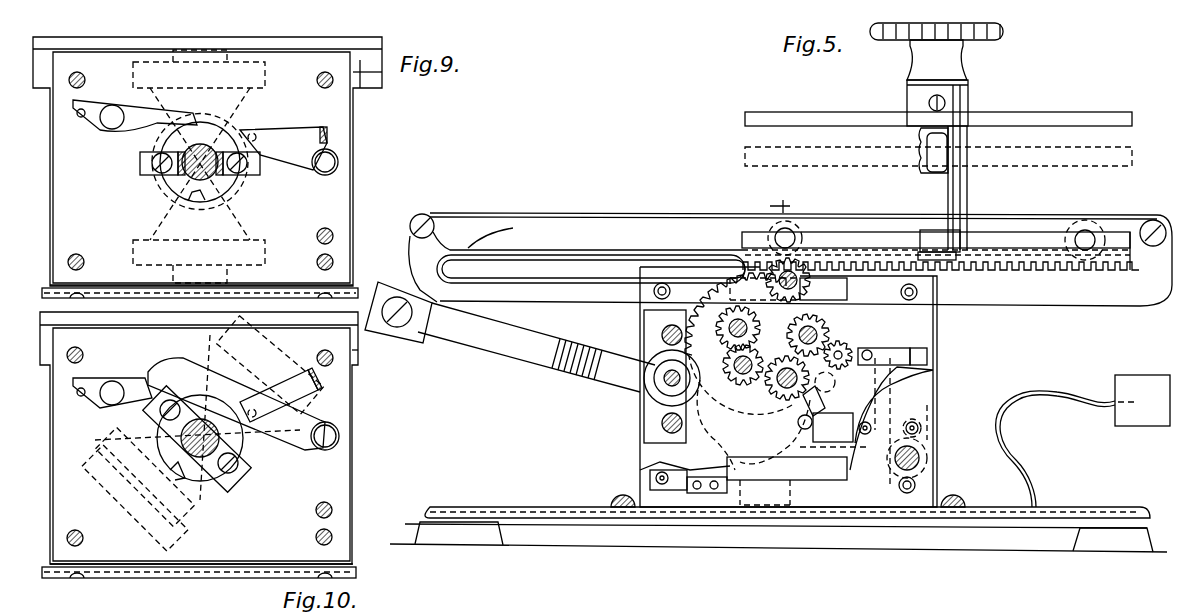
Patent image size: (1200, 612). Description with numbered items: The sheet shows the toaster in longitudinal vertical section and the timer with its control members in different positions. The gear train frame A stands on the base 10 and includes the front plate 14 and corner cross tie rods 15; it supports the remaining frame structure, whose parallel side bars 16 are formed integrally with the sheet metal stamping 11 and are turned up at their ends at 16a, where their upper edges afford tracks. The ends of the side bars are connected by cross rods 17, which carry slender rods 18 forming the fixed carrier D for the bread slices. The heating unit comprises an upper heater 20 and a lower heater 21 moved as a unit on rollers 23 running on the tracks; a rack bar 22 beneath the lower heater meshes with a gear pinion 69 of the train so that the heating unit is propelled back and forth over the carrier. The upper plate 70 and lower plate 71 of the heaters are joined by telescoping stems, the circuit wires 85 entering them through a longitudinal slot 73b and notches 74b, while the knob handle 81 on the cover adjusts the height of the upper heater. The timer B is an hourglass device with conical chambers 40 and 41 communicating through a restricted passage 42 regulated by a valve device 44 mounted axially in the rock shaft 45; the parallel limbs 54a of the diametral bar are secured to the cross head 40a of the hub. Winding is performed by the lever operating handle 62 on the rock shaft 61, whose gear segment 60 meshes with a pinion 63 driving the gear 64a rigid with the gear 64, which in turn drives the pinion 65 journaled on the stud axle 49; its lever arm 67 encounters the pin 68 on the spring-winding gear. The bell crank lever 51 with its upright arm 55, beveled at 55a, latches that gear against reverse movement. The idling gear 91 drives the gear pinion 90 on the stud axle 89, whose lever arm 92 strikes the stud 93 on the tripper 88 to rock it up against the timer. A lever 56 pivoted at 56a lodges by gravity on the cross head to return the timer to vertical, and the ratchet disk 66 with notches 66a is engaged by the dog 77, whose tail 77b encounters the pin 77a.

In FIG. 9, the base 10 is at (328, 290).
In FIG. 10, the base 10 is at (232, 564).
In FIG. 5, the base 10 is at (555, 520).
In FIG. 9, the sheet metal stamping 11 is at (62, 205).
In FIG. 10, the sheet metal stamping 11 is at (75, 438).
In FIG. 5, the sheet metal stamping 11 is at (640, 438).
In FIG. 9, the front plate 14 is at (330, 198).
In FIG. 10, the front plate 14 is at (322, 486).
In FIG. 5, the front plate 14 is at (888, 495).
In FIG. 9, the corner cross tie rods 15 is at (82, 76).
In FIG. 10, the corner cross tie rods 15 is at (80, 352).
In FIG. 5, the corner cross tie rods 15 is at (654, 292).
In FIG. 9, the side bars 16 is at (366, 80).
In FIG. 10, the side bars 16 is at (358, 362).
In FIG. 5, the side bars 16 is at (603, 276).
In FIG. 5, the turned-up ends of side bars 16a is at (506, 237).
In FIG. 5, the cross rods 17 is at (428, 214).
In FIG. 5, the slender rods 18 is at (612, 213).
In FIG. 5, the upper heater 20 is at (745, 120).
In FIG. 5, the lower heater 21 is at (1000, 230).
In FIG. 5, the rack bar 22 is at (1002, 272).
In FIG. 5, the rollers 23 is at (772, 228).
In FIG. 9, the conical chamber 40 is at (265, 70).
In FIG. 10, the conical chamber 40 is at (262, 408).
In FIG. 5, the conical chamber 40 is at (848, 292).
In FIG. 9, the cross head 40a is at (140, 160).
In FIG. 10, the cross head 40a is at (250, 472).
In FIG. 9, the conical chamber 41 is at (262, 255).
In FIG. 10, the conical chamber 41 is at (190, 540).
In FIG. 5, the conical chamber 41 is at (840, 480).
In FIG. 10, the restricted passage 42 is at (222, 436).
In FIG. 9, the valve device 44 is at (200, 162).
In FIG. 10, the valve device 44 is at (200, 457).
In FIG. 9, the rock shaft 45 is at (228, 176).
In FIG. 10, the rock shaft 45 is at (165, 435).
In FIG. 5, the stud axle 49 is at (775, 432).
In FIG. 5, the bell crank lever 51 is at (758, 473).
In FIG. 9, the parallel limbs 54a is at (145, 130).
In FIG. 10, the parallel limbs 54a is at (160, 412).
In FIG. 5, the upright arm 55 is at (925, 400).
In FIG. 5, the beveled end 55a is at (930, 372).
In FIG. 9, the lever 56 is at (297, 150).
In FIG. 10, the lever 56 is at (234, 388).
In FIG. 9, the pivot 56a is at (338, 158).
In FIG. 10, the pivot 56a is at (339, 432).
In FIG. 5, the gear segment 60 is at (716, 425).
In FIG. 5, the rock shaft 61 is at (668, 375).
In FIG. 5, the lever operating handle 62 is at (488, 335).
In FIG. 5, the pinion 63 is at (743, 379).
In FIG. 5, the gear 64 is at (760, 275).
In FIG. 5, the gear 64a is at (738, 343).
In FIG. 5, the pinion 65 is at (787, 388).
In FIG. 9, the ratchet disk 66 is at (165, 173).
In FIG. 10, the ratchet disk 66 is at (160, 455).
In FIG. 9, the ratchet notches 66a is at (210, 118).
In FIG. 10, the ratchet notches 66a is at (175, 494).
In FIG. 5, the lever arm 67 is at (828, 414).
In FIG. 5, the pin 68 is at (800, 426).
In FIG. 5, the gear pinion 69 is at (748, 268).
In FIG. 5, the upper plate 70 is at (855, 100).
In FIG. 5, the lower plate 71 is at (1008, 256).
In FIG. 5, the longitudinal slot 73b is at (920, 142).
In FIG. 5, the notches 74b is at (968, 135).
In FIG. 9, the dog 77 is at (153, 123).
In FIG. 10, the dog 77 is at (150, 400).
In FIG. 9, the pin 77a is at (80, 116).
In FIG. 10, the pin 77a is at (80, 396).
In FIG. 9, the tail 77b is at (87, 100).
In FIG. 10, the tail 77b is at (95, 378).
In FIG. 5, the operating knob handle 81 is at (964, 58).
In FIG. 5, the circuit wires 85 is at (924, 163).
In FIG. 9, the tripper 88 is at (328, 118).
In FIG. 10, the tripper 88 is at (320, 380).
In FIG. 5, the tripper 88 is at (927, 356).
In FIG. 5, the stud axle 89 is at (842, 370).
In FIG. 5, the gear pinion 90 is at (868, 350).
In FIG. 5, the idling gear 91 is at (830, 328).
In FIG. 5, the lever arm 92 is at (846, 378).
In FIG. 5, the stud 93 is at (894, 379).
In FIG. 5, the gear train frame A is at (642, 402).
In FIG. 9, the timer B is at (145, 216).
In FIG. 10, the timer B is at (210, 338).
In FIG. 5, the timer B is at (840, 480).
In FIG. 5, the fixed carrier D is at (886, 213).